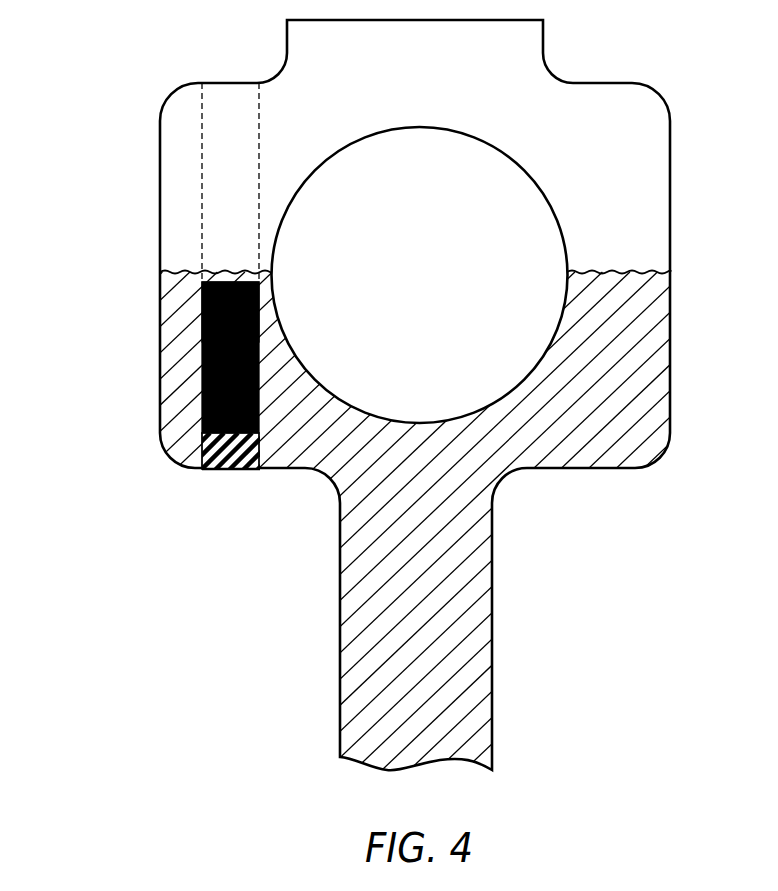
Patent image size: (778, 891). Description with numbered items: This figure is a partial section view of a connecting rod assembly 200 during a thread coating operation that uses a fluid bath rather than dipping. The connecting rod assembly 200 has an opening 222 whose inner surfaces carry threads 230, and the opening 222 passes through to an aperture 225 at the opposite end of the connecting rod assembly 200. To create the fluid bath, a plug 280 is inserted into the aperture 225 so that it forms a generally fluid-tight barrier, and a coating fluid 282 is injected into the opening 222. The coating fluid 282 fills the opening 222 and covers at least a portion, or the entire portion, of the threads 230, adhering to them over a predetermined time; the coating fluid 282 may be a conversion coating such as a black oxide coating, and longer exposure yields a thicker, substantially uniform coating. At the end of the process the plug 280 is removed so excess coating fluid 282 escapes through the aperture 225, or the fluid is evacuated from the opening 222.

The connecting rod assembly 200 is at (132, 129).
The opening 222 is at (230, 104).
The threads 230 is at (228, 374).
The coating fluid 282 is at (228, 319).
The plug 280 is at (233, 452).
The aperture 225 is at (212, 486).